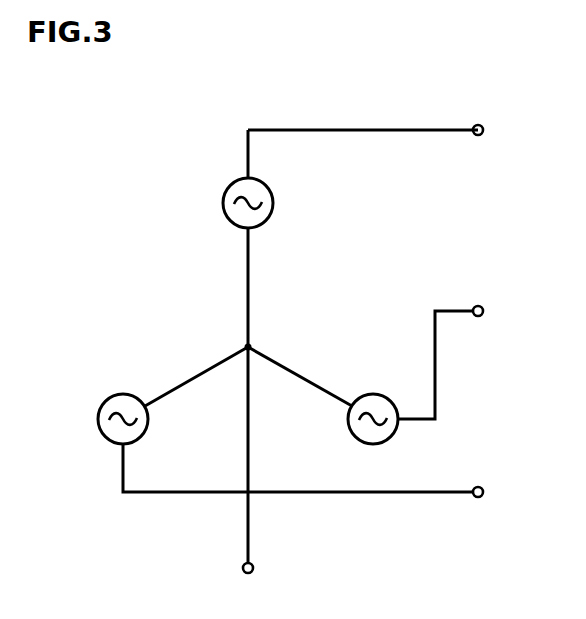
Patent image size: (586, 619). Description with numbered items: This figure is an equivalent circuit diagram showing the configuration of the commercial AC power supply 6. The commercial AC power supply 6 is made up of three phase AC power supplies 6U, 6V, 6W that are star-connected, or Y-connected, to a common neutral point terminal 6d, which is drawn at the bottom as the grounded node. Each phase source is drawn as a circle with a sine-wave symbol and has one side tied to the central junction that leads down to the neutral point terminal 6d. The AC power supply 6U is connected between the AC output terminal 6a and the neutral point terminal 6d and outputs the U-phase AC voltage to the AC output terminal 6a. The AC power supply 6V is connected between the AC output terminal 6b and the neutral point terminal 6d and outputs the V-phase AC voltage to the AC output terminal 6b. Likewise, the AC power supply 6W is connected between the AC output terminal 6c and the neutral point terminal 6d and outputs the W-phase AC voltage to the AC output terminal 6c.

The commercial AC power supply 6 is at (137, 121).
The AC power supply 6U is at (273, 202).
The AC power supply 6V is at (372, 394).
The AC power supply 6W is at (121, 394).
The AC output terminal 6a is at (479, 125).
The AC output terminal 6b is at (479, 306).
The AC output terminal 6c is at (479, 487).
The neutral point terminal 6d is at (254, 568).